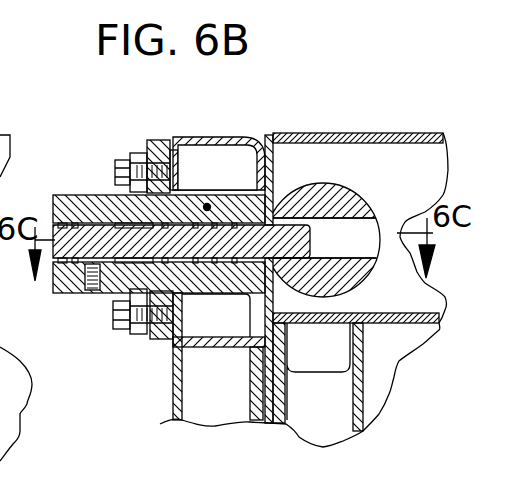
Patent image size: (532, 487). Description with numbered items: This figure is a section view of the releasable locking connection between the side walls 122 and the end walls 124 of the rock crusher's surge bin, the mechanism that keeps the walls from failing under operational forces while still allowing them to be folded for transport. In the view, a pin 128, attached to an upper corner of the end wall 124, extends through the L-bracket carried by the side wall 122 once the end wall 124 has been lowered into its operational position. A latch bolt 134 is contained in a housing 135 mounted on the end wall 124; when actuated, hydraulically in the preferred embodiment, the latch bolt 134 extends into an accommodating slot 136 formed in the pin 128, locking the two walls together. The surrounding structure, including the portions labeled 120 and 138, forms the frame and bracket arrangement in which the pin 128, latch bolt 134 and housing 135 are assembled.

The mounting assembly 120 is at (289, 118).
The side wall 122 is at (197, 136).
The end wall 124 is at (416, 131).
The pin 128 is at (344, 190).
The latch bolt 134 is at (227, 236).
The housing 135 is at (72, 194).
The accommodating slot 136 is at (345, 237).
The lower flange member 138 is at (173, 396).